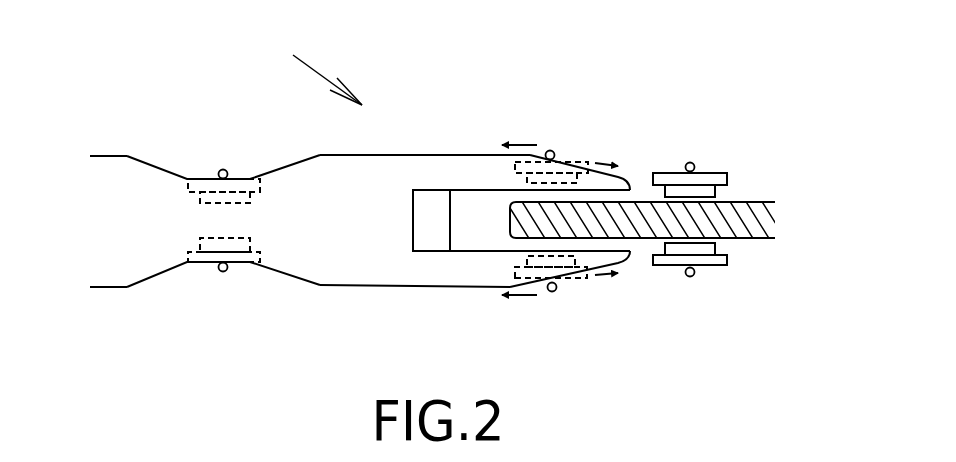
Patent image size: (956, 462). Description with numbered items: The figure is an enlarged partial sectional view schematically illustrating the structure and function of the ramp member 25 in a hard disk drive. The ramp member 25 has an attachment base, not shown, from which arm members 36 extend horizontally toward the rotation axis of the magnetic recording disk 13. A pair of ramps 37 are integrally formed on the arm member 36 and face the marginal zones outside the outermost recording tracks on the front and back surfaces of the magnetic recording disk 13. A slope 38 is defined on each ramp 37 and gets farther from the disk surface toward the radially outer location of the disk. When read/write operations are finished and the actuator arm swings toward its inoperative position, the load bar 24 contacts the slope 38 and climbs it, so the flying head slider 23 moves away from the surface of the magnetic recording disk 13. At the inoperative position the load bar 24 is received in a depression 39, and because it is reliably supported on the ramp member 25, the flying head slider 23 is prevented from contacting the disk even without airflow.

The magnetic recording disk 13 is at (743, 200).
The flying head slider 23 is at (708, 192).
The load bar 24 is at (220, 171).
The ramp member 25 is at (306, 65).
The arm member 36 is at (120, 155).
The ramp 37 is at (478, 163).
The slope 38 is at (548, 150).
The depression 39 is at (262, 170).